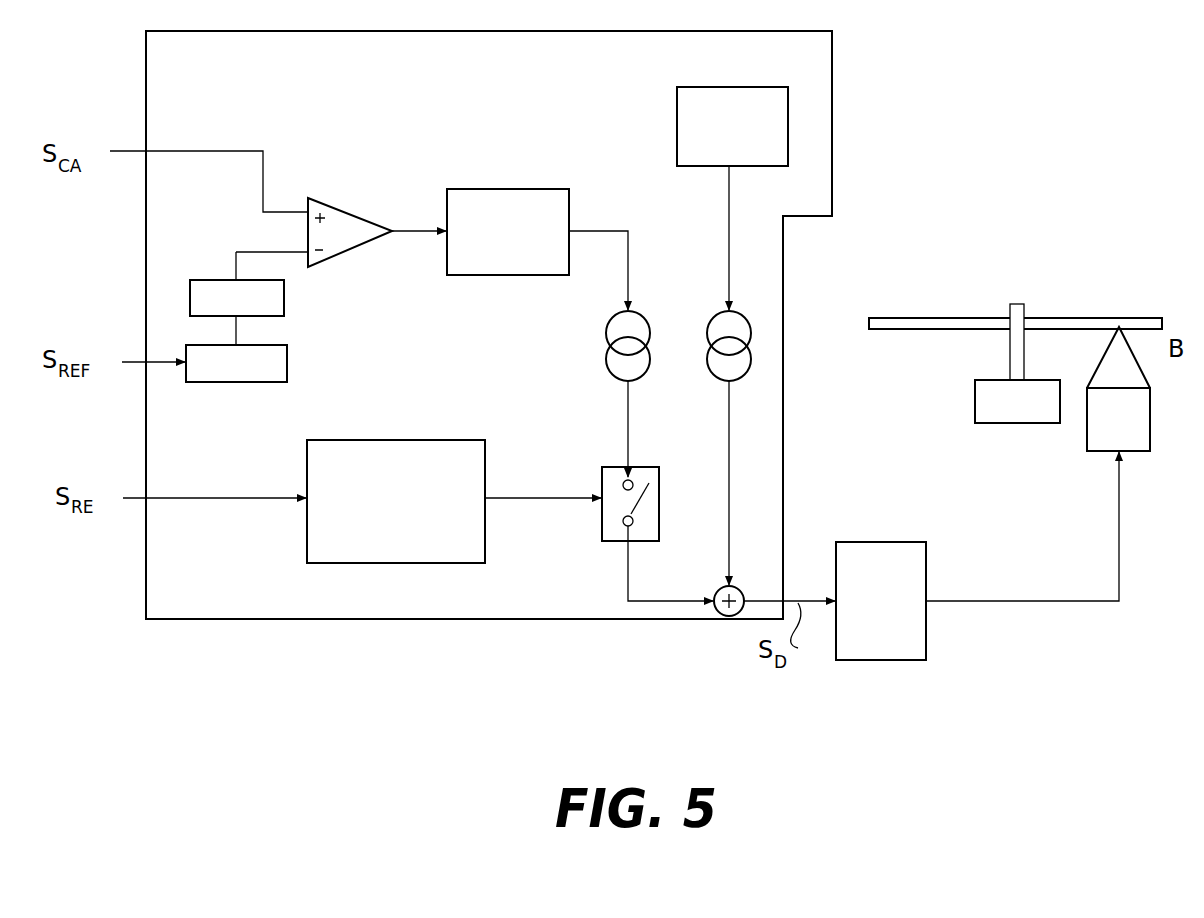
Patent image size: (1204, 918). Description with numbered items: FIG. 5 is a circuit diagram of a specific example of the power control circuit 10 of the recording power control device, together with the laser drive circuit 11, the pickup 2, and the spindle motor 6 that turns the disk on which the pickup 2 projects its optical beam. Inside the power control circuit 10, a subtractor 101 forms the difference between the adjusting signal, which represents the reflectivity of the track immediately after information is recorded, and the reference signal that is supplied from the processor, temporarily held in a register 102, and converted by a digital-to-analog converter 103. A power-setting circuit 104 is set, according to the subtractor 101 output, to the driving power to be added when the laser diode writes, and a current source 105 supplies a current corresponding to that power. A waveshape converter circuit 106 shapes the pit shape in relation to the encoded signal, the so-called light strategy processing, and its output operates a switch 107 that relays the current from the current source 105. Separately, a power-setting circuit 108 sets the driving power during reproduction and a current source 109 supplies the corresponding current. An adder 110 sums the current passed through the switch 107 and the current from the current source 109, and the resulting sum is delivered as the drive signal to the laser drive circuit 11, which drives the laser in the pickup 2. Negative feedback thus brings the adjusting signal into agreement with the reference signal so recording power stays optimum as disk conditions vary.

The power control circuit 10 is at (400, 619).
The subtractor 101 is at (347, 213).
The register 102 is at (287, 365).
The digital-to-analog converter 103 is at (284, 297).
The power-setting circuit 104 is at (498, 189).
The current source 105 is at (605, 332).
The waveshape converter circuit 106 is at (388, 440).
The switch 107 is at (602, 530).
The power-setting circuit 108 is at (677, 100).
The current source 109 is at (719, 381).
The adder 110 is at (720, 615).
The laser drive circuit 11 is at (912, 660).
The pickup 2 is at (1150, 428).
The spindle motor 6 is at (975, 402).